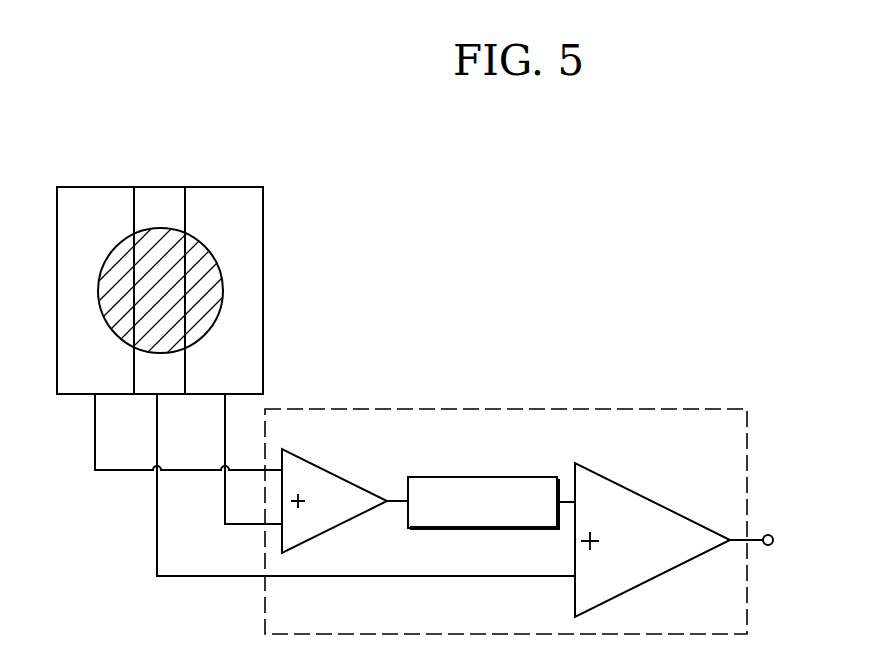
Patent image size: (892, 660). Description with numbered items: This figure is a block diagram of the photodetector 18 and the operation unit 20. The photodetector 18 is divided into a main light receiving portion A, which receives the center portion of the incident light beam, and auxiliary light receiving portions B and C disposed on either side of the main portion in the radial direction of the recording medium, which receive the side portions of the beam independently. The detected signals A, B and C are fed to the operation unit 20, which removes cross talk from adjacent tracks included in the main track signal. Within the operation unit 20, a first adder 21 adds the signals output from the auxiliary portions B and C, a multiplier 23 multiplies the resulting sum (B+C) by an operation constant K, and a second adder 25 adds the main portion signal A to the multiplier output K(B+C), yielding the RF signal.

The photodetector 18 is at (92, 170).
The operation unit 20 is at (634, 409).
The first adder 21 is at (326, 467).
The multiplier 23 is at (470, 475).
The second adder 25 is at (628, 485).